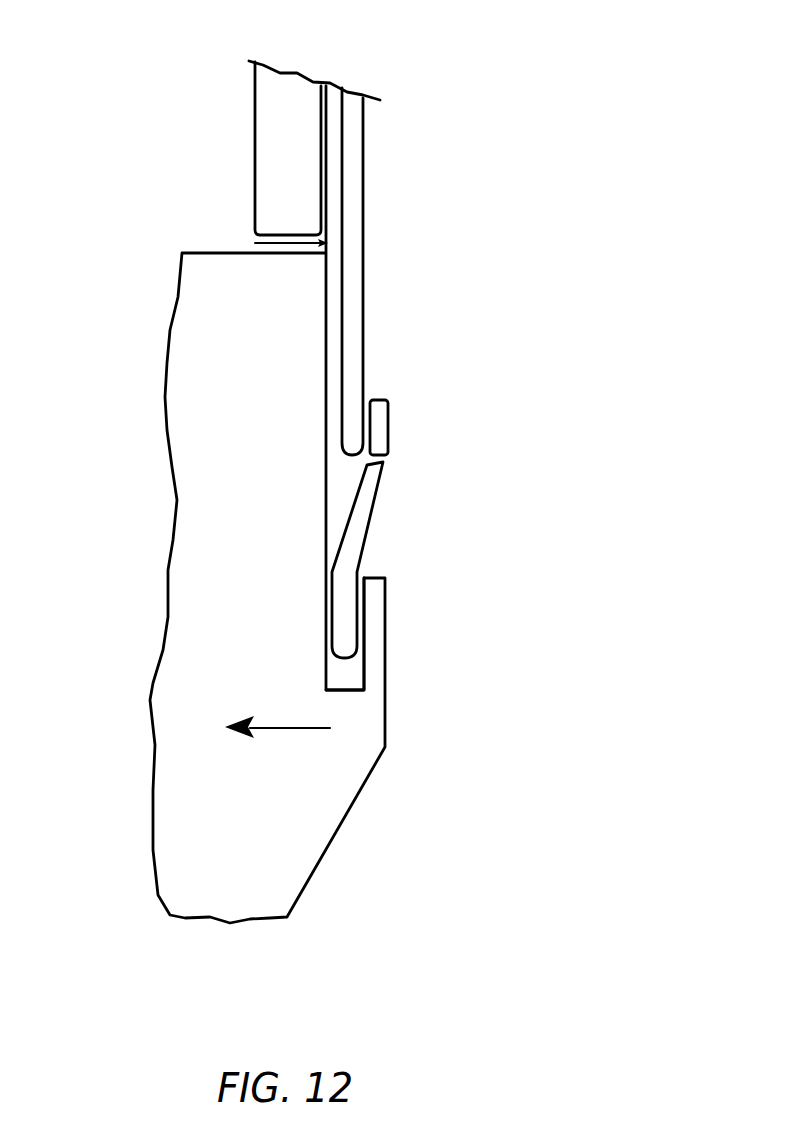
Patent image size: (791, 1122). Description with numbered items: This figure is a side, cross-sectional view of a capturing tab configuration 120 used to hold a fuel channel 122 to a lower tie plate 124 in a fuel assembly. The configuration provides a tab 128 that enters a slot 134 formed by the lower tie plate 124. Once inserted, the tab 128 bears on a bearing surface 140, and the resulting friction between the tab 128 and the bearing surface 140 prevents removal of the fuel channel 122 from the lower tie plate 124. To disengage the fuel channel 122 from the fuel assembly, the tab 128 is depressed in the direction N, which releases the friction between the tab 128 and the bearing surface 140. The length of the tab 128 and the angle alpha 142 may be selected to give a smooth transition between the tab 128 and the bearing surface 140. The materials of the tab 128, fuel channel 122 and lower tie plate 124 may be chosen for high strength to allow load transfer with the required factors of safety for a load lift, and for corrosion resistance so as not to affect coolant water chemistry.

The capturing tab configuration 120 is at (373, 469).
The fuel channel 122 is at (363, 138).
The lower tie plate 124 is at (200, 568).
The tab 128 is at (372, 489).
The slot 134 is at (357, 673).
The bearing surface 140 is at (382, 417).
The angle α 142 is at (335, 507).